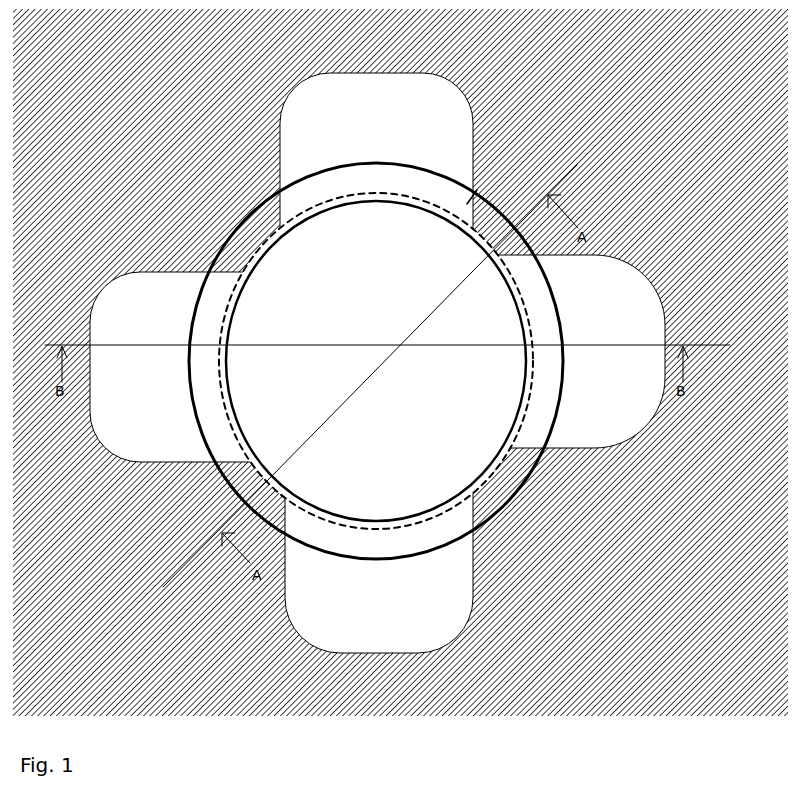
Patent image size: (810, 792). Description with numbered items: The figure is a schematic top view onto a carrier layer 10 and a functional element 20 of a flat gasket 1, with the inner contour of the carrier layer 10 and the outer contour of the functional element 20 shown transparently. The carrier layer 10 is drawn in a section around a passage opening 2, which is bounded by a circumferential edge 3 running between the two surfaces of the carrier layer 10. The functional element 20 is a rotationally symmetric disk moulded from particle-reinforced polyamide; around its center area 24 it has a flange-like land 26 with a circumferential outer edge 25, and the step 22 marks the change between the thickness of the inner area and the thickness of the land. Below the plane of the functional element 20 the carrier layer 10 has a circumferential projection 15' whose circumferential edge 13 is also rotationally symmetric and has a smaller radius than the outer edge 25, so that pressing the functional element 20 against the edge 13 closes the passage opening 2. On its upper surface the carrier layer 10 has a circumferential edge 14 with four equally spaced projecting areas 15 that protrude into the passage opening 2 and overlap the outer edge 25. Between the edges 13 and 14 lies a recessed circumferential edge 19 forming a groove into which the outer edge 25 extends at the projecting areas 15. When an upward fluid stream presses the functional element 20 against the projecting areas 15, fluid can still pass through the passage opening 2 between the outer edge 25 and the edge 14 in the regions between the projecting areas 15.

The flat gasket 1 is at (668, 181).
The passage opening 2 is at (388, 455).
The circumferential edge 3 is at (627, 440).
The carrier layer 10 is at (400, 362).
The circumferential edge 13 is at (447, 212).
The circumferential edge 14 is at (475, 112).
The projecting areas 15 is at (350, 350).
The circumferential projection 15' is at (242, 388).
The circumferential edge 19 is at (657, 300).
The functional element 20 is at (362, 272).
The step 22 is at (240, 290).
The center area 24 is at (430, 399).
The circumferential outer edge 25 is at (562, 322).
The flange-like land 26 is at (553, 392).